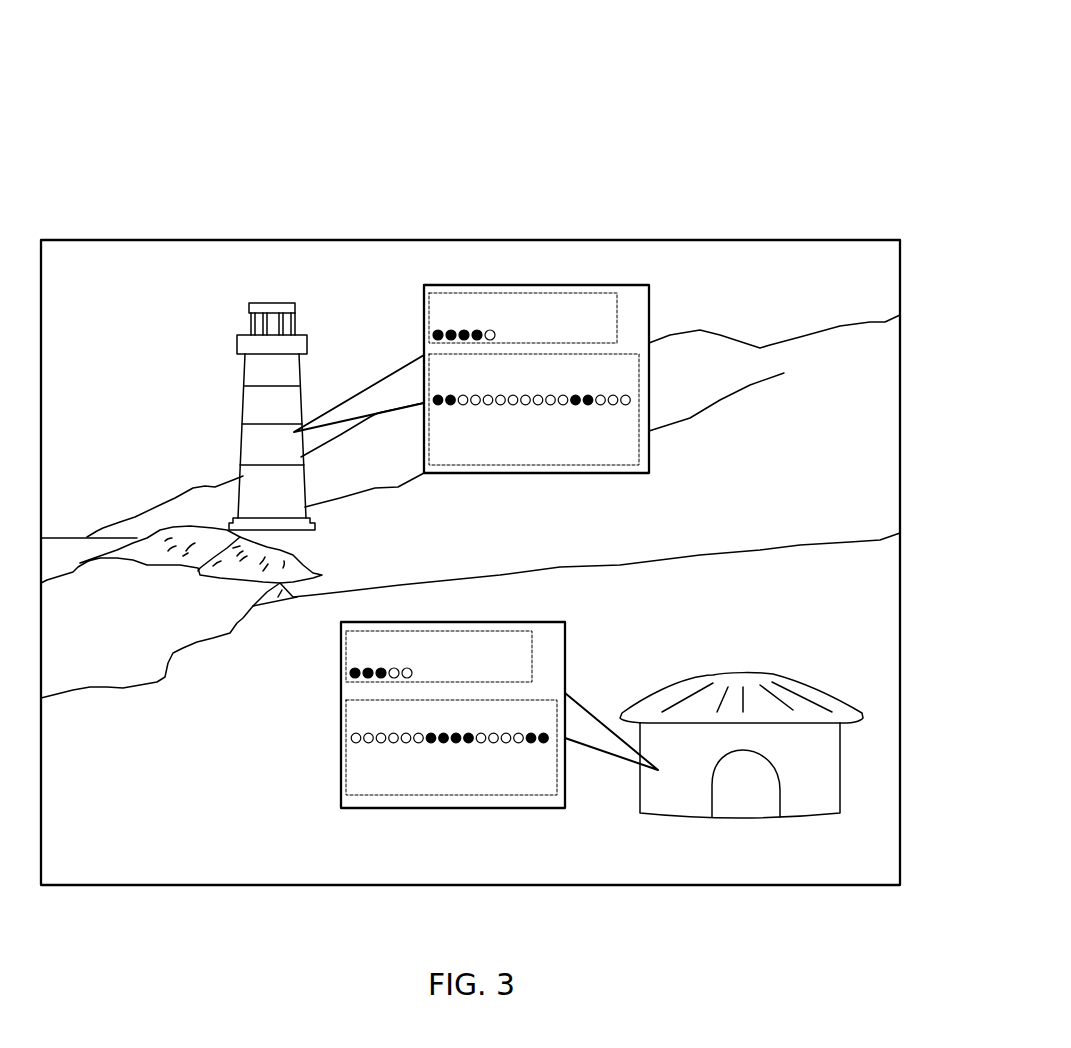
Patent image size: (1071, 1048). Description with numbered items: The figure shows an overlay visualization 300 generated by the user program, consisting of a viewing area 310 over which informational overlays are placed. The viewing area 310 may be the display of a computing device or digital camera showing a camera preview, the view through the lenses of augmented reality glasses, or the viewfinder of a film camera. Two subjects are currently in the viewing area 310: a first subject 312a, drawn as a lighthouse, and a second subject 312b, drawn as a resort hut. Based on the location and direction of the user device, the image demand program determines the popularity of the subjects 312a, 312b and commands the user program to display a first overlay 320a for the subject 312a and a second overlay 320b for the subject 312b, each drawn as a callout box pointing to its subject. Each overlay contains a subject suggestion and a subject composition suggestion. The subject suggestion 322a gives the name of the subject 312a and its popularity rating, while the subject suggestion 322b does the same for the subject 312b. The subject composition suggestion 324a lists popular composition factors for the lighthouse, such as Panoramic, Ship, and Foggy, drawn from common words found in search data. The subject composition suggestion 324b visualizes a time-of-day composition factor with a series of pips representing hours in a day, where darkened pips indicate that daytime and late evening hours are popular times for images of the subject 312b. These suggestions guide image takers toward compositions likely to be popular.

The overlay visualization 300 is at (717, 120).
The viewing area 310 is at (107, 293).
The subject 312a is at (274, 368).
The subject 312b is at (743, 790).
The subject suggestion 322a is at (618, 322).
The overlay 320a is at (650, 383).
The subject composition suggestion 324a is at (639, 453).
The subject suggestion 322b is at (341, 658).
The overlay 320b is at (341, 715).
The subject composition suggestion 324b is at (341, 767).